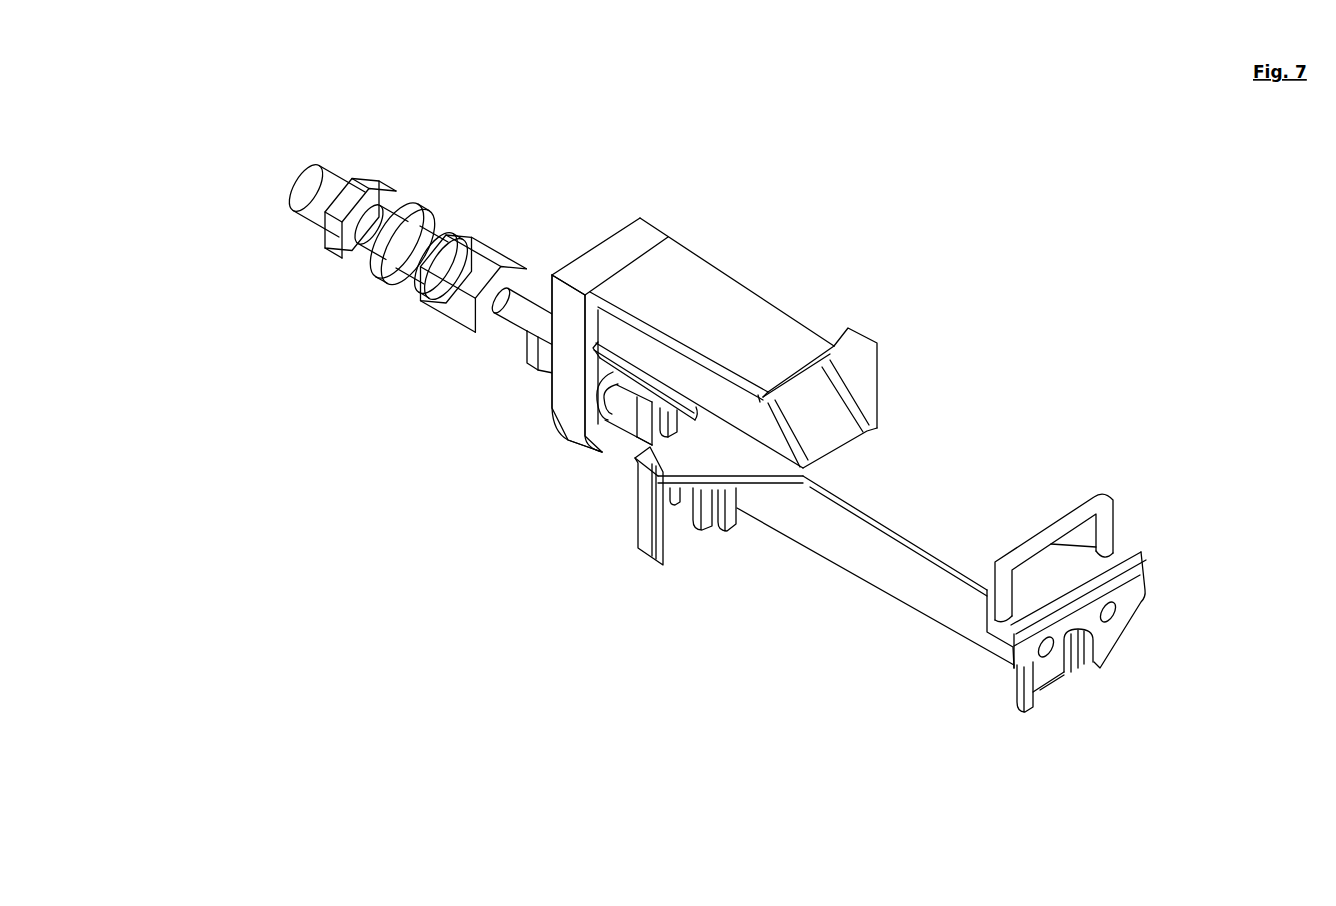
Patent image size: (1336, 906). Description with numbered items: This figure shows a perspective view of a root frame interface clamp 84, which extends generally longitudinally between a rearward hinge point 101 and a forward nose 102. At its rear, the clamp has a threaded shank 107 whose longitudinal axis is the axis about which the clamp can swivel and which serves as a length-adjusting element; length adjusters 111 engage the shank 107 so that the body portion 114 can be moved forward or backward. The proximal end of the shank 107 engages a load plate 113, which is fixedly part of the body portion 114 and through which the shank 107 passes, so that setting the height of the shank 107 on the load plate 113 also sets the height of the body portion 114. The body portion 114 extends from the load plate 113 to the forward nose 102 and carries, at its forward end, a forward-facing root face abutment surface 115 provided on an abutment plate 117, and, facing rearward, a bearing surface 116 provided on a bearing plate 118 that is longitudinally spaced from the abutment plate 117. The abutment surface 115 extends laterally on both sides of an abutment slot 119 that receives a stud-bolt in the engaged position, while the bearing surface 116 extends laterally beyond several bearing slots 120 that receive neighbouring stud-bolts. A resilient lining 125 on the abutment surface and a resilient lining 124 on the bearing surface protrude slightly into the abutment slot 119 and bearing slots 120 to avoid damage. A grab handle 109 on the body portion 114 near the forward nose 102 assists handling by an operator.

The interface clamp 84 is at (1008, 78).
The rearward hinge point 101 is at (445, 178).
The forward nose 102 is at (940, 753).
The shank 107 is at (308, 180).
The grab handle 109 is at (1120, 502).
The length adjusters 111 is at (428, 345).
The load plate 113 is at (570, 402).
The body portion 114 is at (893, 408).
The root face abutment surface 115 is at (1115, 627).
The bearing surface 116 is at (633, 513).
The abutment plate 117 is at (1022, 687).
The bearing plate 118 is at (647, 540).
The abutment slot 119 is at (1073, 670).
The bearing slots 120 is at (700, 525).
The resilient lining 124 is at (670, 543).
The resilient lining 125 is at (1052, 682).